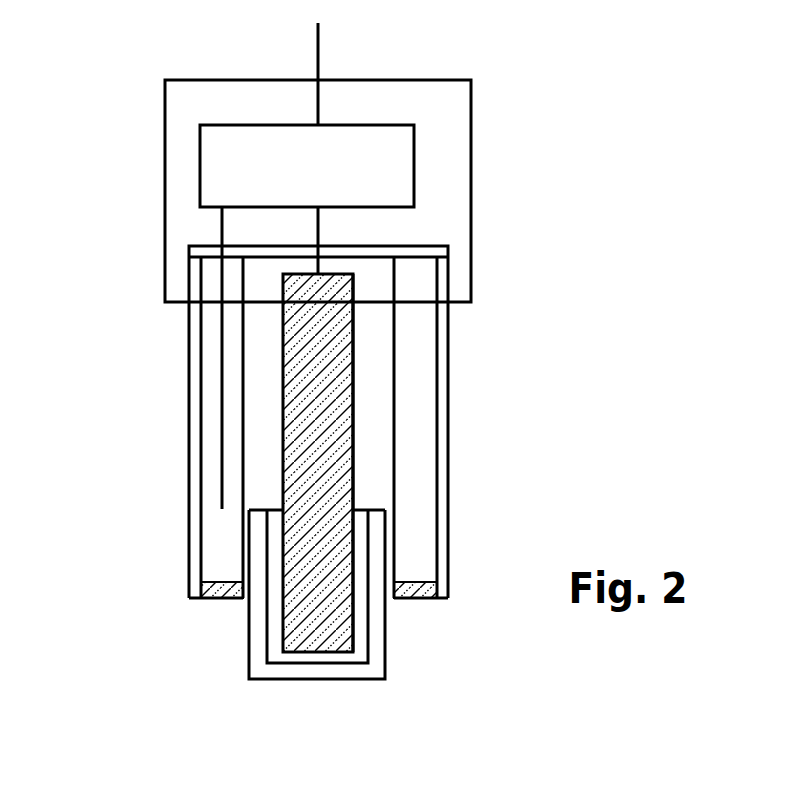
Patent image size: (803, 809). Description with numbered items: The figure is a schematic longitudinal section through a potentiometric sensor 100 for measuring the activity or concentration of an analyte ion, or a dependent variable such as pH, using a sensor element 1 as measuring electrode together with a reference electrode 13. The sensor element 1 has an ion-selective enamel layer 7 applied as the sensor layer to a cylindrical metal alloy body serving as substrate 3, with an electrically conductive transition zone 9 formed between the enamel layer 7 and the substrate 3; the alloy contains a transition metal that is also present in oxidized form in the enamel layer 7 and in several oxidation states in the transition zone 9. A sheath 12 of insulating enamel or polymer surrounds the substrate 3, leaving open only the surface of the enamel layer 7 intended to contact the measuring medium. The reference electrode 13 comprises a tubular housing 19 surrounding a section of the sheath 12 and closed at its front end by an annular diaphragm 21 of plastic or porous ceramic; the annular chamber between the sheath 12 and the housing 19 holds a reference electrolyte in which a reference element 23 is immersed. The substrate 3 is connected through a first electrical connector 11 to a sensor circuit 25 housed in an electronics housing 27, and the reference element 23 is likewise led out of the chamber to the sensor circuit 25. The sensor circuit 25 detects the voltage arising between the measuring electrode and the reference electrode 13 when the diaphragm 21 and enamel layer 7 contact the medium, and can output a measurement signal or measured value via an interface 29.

The potentiometric sensor 100 is at (618, 146).
The sensor element 1 is at (355, 365).
The substrate 3 is at (355, 475).
The ion-selective enamel layer 7 is at (377, 670).
The transition zone 9 is at (363, 637).
The first electrical connector 11 is at (318, 232).
The sheath 12 is at (373, 420).
The reference electrode 13 is at (211, 365).
The tubular housing 19 is at (189, 430).
The annular diaphragm 21 is at (222, 600).
The reference element 23 is at (222, 488).
The sensor circuit 25 is at (243, 150).
The electronics housing 27 is at (471, 113).
The interface 29 is at (318, 42).